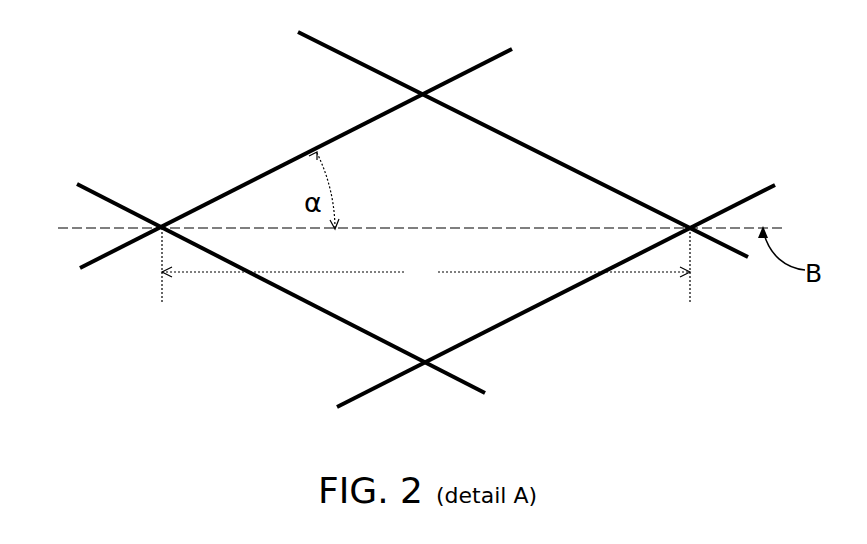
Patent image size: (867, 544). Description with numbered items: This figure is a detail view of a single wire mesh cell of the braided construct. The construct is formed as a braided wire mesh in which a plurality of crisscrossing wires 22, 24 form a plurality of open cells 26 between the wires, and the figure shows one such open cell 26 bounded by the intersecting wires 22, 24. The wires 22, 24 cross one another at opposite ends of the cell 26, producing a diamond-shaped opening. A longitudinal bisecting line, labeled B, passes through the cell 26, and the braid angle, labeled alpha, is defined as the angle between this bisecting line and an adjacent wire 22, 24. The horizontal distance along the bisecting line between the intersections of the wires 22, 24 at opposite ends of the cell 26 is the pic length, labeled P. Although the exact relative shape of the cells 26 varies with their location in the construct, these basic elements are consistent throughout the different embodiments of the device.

The wire 22 is at (81, 270).
The wire 24 is at (327, 47).
The open cell 26 is at (368, 300).